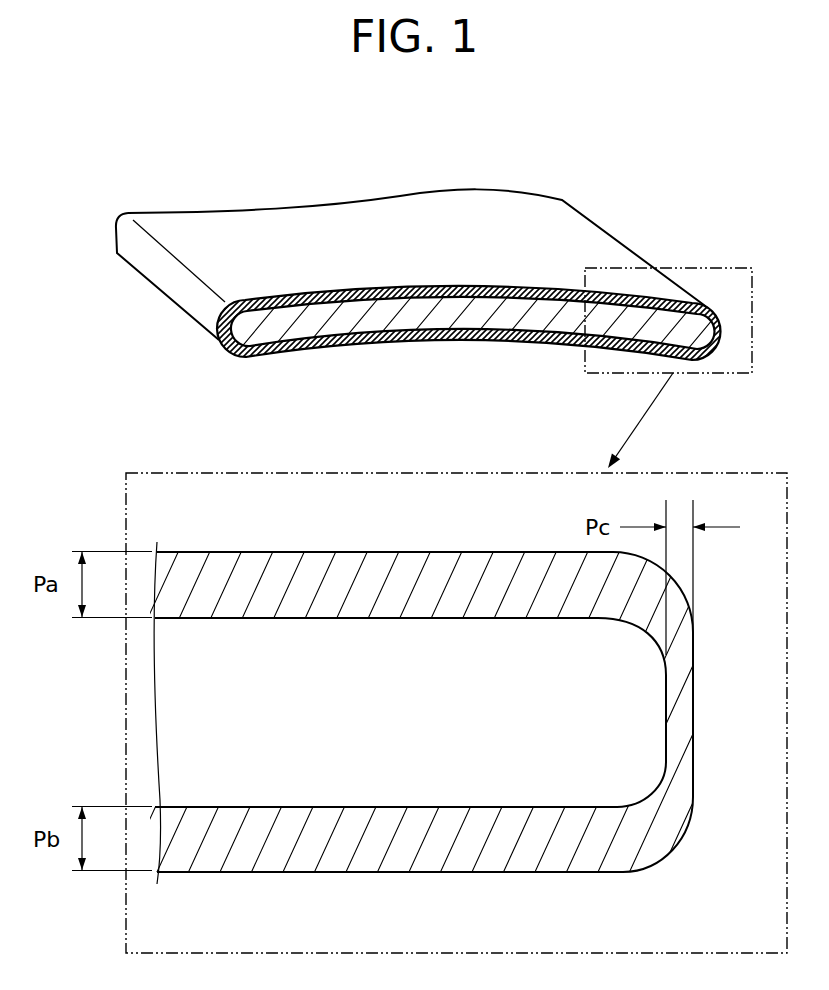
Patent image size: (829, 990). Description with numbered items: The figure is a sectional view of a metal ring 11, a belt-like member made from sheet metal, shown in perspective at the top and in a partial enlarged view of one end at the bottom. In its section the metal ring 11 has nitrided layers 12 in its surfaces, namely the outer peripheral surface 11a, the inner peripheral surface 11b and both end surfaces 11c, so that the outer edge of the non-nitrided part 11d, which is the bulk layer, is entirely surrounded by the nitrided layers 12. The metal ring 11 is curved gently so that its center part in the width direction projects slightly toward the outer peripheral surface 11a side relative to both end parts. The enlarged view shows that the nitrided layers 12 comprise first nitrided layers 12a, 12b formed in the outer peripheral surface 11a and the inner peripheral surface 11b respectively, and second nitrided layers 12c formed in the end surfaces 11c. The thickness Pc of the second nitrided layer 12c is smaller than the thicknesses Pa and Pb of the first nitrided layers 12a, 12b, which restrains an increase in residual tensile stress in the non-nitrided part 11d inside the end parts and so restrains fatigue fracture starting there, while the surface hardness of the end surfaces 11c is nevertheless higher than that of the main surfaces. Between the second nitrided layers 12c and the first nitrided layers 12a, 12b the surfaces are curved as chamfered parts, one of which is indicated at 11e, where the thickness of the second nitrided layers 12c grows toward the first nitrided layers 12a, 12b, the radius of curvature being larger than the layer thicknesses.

The metal ring 11 is at (660, 233).
The outer peripheral surface 11a is at (272, 226).
The inner peripheral surface 11b is at (273, 357).
The end surface 11c is at (173, 282).
The non-nitrided part 11d is at (530, 323).
The inner corner portion 11e is at (643, 793).
The nitrided layer 12 is at (436, 343).
The first nitrided layer 12a is at (510, 616).
The first nitrided layer 12b is at (509, 818).
The second nitrided layer 12c is at (670, 718).